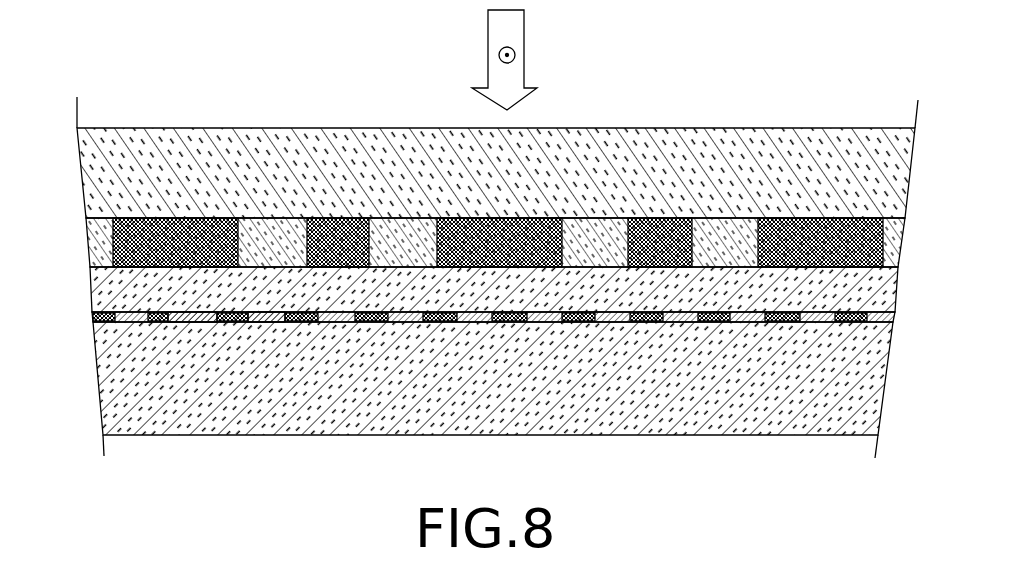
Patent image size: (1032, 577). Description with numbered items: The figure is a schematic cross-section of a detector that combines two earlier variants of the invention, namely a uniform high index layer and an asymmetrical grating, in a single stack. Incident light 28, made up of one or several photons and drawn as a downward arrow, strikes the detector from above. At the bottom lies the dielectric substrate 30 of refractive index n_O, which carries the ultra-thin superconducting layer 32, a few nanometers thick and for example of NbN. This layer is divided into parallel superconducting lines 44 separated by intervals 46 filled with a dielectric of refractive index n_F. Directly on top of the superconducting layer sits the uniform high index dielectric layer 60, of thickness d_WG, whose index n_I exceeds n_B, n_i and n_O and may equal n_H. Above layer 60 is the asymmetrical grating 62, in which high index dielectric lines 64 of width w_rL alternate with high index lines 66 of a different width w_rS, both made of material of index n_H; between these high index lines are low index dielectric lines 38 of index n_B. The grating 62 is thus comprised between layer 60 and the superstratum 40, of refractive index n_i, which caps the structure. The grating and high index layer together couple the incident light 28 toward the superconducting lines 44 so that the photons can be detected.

The incident light 28 is at (488, 22).
The dielectric substrate 30 is at (99, 364).
The ultra-thin superconducting layer 32 is at (810, 306).
The low index dielectric lines 38 is at (605, 253).
The superstratum 40 is at (84, 176).
The superconducting lines 44 is at (200, 322).
The intervals 46 is at (375, 322).
The uniform high index dielectric layer 60 is at (92, 288).
The asymmetrical grating 62 is at (678, 214).
The lines of width w_rL 64 is at (147, 250).
The lines of width w_rS 66 is at (330, 250).